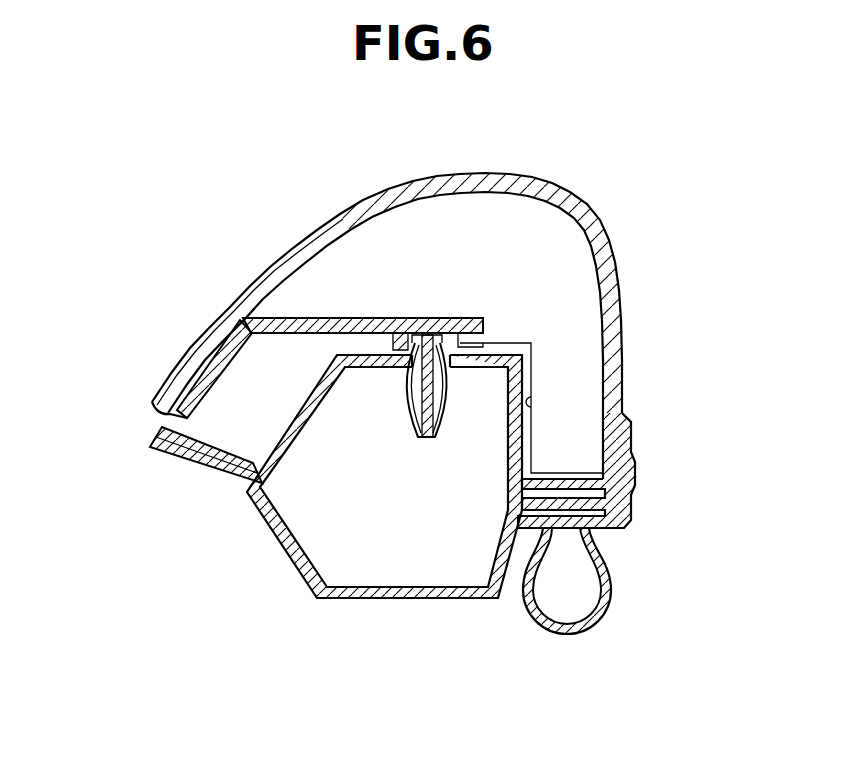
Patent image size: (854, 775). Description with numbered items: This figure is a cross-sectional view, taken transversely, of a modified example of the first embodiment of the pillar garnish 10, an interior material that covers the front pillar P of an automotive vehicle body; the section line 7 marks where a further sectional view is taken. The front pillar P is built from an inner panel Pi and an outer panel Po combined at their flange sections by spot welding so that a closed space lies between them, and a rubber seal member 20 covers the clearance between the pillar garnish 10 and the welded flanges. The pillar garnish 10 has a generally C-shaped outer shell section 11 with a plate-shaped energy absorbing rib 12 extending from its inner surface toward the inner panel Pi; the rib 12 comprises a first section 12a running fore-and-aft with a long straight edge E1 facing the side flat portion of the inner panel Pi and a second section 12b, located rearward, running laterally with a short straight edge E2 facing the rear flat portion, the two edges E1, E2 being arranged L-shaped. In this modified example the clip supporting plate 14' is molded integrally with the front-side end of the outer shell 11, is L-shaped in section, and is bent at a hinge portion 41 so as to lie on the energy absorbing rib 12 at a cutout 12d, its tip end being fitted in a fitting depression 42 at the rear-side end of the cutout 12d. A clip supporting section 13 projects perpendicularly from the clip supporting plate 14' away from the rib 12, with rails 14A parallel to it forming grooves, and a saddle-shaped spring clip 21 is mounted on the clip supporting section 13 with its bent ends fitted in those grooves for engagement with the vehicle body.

The section line VII-VII 7 is at (429, 562).
The pillar garnish 10 is at (614, 236).
The outer shell section 11 is at (622, 320).
The energy absorbing rib 12 is at (513, 207).
The first section 12a is at (282, 282).
The second section 12b is at (588, 395).
The cutout 12d is at (336, 317).
The clip supporting section 13 is at (431, 440).
The rail 14A is at (450, 370).
The clip supporting plate 14' is at (194, 485).
The seal member 20 is at (612, 568).
The clip 21 is at (417, 422).
The hinge portion 41 is at (160, 410).
The fitting depression 42 is at (485, 327).
The long straight edge E1 is at (218, 369).
The short straight edge E2 is at (529, 403).
The front pillar P is at (331, 603).
The inner panel Pi is at (240, 488).
The outer panel Po is at (418, 597).